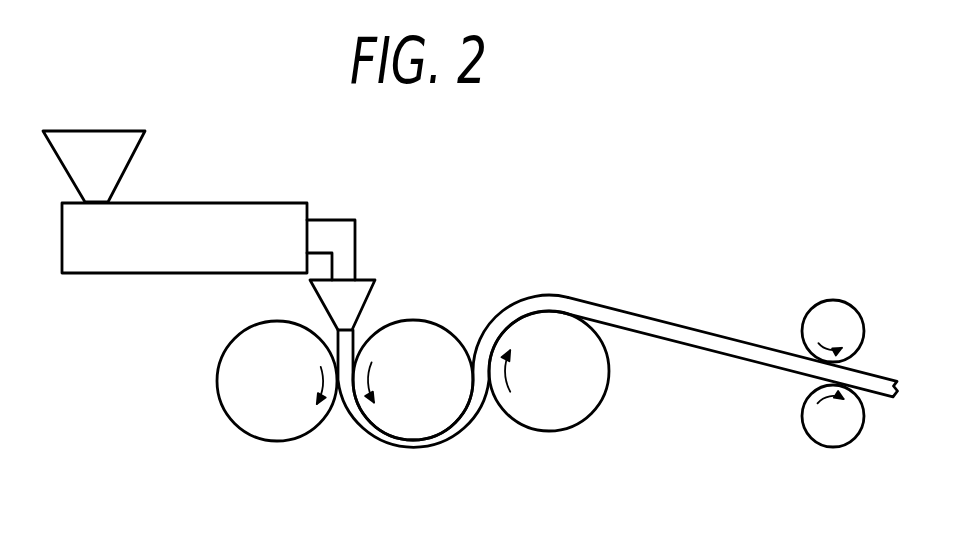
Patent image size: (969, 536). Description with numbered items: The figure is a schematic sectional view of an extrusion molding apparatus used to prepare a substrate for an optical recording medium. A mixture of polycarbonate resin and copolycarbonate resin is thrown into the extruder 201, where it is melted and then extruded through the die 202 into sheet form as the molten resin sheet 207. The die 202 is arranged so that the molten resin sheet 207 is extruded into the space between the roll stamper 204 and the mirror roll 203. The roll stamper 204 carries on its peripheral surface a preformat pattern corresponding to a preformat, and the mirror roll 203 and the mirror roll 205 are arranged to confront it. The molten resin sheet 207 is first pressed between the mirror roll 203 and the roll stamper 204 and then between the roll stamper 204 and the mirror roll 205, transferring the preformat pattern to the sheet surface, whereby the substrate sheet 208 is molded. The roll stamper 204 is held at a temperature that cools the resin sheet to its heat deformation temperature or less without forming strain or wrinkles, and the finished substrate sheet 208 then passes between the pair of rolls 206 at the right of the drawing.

The extruder 201 is at (272, 218).
The die 202 is at (362, 285).
The mirror roll 203 is at (262, 418).
The roll stamper 204 is at (437, 340).
The mirror roll 205 is at (548, 412).
The take-off rolls 206 is at (847, 322).
The molten resin sheet 207 is at (347, 347).
The substrate sheet 208 is at (667, 330).